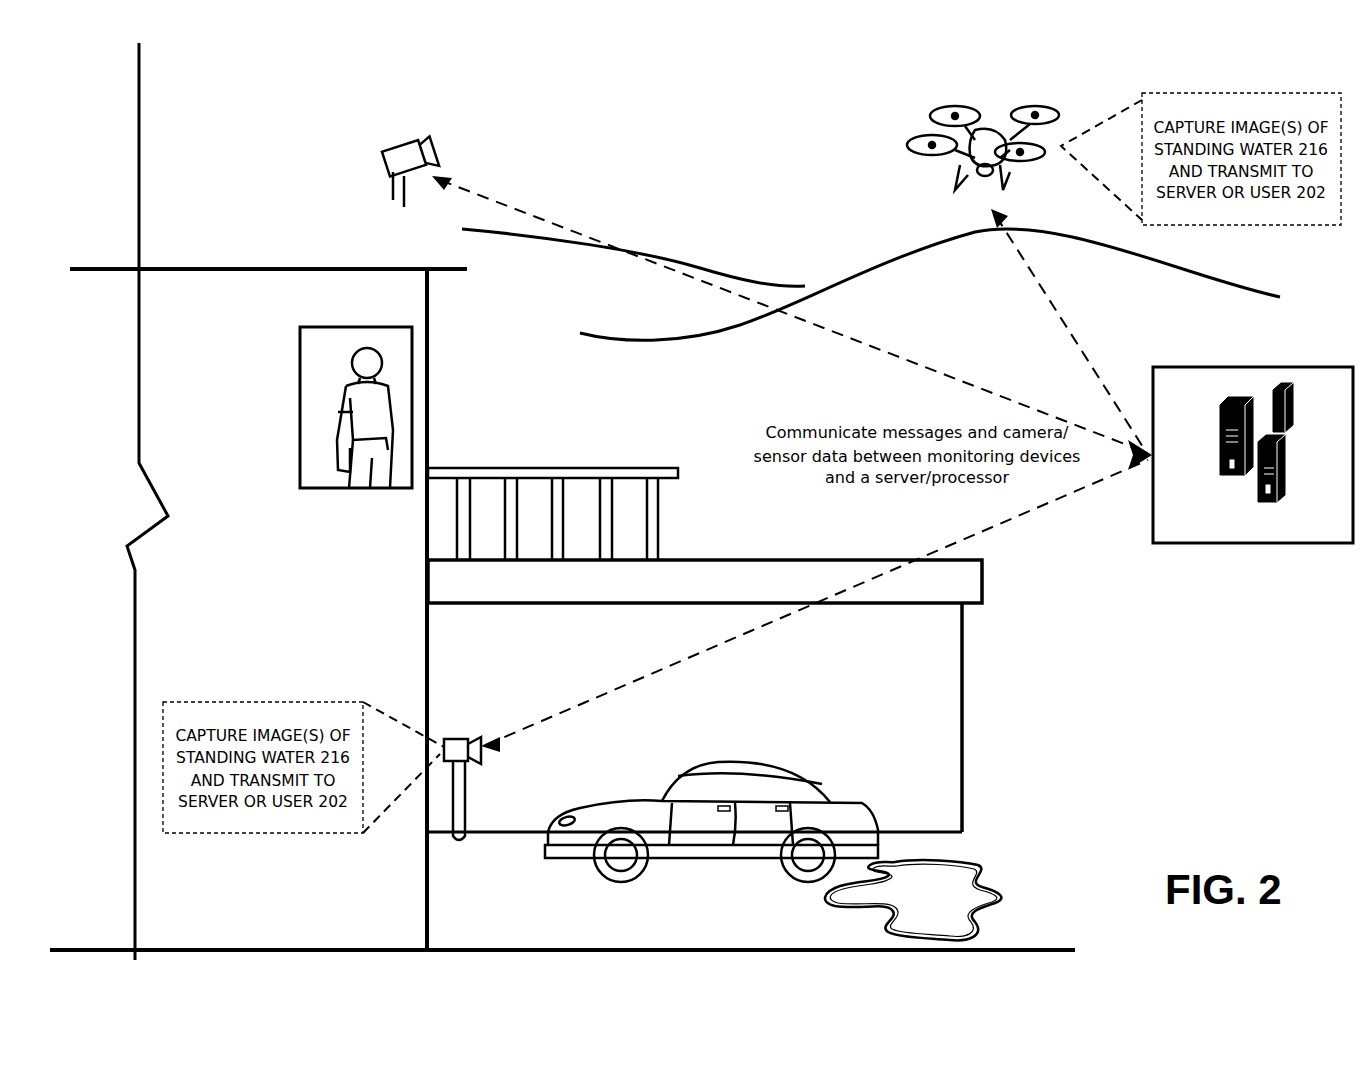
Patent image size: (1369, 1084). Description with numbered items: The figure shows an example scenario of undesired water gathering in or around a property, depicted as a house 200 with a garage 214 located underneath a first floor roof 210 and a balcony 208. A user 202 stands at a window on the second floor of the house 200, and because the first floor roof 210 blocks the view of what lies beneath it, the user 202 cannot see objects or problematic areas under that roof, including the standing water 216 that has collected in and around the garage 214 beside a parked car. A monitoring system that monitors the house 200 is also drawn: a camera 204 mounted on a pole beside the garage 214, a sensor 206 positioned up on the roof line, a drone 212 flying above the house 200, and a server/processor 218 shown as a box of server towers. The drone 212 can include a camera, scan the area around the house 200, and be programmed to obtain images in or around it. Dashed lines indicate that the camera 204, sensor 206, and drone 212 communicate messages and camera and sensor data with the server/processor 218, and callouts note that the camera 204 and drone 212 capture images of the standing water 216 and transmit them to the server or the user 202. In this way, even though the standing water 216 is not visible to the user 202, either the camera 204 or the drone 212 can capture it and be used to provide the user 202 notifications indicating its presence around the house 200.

The house 200 is at (139, 138).
The user 202 is at (355, 378).
The camera 204 is at (479, 737).
The sensor 206 is at (403, 137).
The balcony 208 is at (678, 470).
The first floor roof 210 is at (982, 598).
The drone 212 is at (1040, 105).
The garage 214 is at (942, 668).
The standing water 216 is at (983, 862).
The server/processor 218 is at (1180, 543).